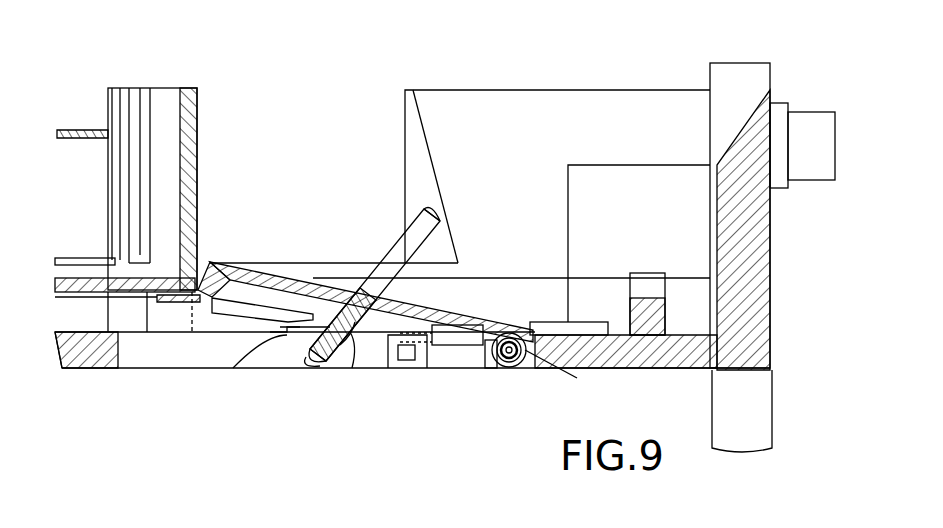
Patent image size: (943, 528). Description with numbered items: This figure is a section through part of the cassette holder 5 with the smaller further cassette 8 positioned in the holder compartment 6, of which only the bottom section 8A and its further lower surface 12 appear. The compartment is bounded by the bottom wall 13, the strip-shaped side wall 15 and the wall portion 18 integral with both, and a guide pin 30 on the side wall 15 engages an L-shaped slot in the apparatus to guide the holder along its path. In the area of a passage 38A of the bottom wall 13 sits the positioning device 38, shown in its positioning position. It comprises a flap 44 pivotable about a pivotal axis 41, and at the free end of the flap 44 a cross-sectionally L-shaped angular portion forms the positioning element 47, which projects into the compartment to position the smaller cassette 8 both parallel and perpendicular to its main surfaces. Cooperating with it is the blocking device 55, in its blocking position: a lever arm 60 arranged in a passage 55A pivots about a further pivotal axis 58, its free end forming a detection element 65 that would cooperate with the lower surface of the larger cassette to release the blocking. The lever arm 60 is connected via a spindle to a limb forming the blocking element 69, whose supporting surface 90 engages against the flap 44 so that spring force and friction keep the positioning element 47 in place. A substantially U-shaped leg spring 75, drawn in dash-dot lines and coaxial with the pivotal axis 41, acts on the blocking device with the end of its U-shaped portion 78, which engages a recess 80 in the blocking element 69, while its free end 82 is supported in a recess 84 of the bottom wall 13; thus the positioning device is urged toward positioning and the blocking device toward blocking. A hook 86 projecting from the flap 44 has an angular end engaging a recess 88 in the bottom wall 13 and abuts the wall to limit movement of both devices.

The cassette holder 5 is at (809, 292).
The holder compartment 6 is at (633, 78).
The smaller further cassette 8 is at (215, 147).
The bottom section 8A is at (165, 98).
The further lower surface 12 is at (72, 300).
The bottom wall 13 is at (76, 350).
The side wall 15 is at (760, 212).
The wall portion 18 is at (548, 282).
The guide pin 30 is at (808, 122).
The positioning device 38 is at (223, 250).
The passage 38A is at (120, 347).
The pivotal axis 41 is at (507, 368).
The flap 44 is at (290, 270).
The positioning element 47 is at (207, 333).
The blocking device 55 is at (393, 236).
The passage 55A is at (317, 373).
The further pivotal axis 58 is at (292, 372).
The lever arm 60 is at (380, 280).
The detection element 65 is at (438, 213).
The blocking element 69 is at (287, 338).
The leg spring 75 is at (451, 350).
The U-shaped portion 78 is at (363, 323).
The recess 80 is at (352, 348).
The free end 82 is at (573, 377).
The recess 84 is at (545, 360).
The hook 86 is at (403, 358).
The recess 88 is at (395, 347).
The supporting surface 90 is at (305, 305).